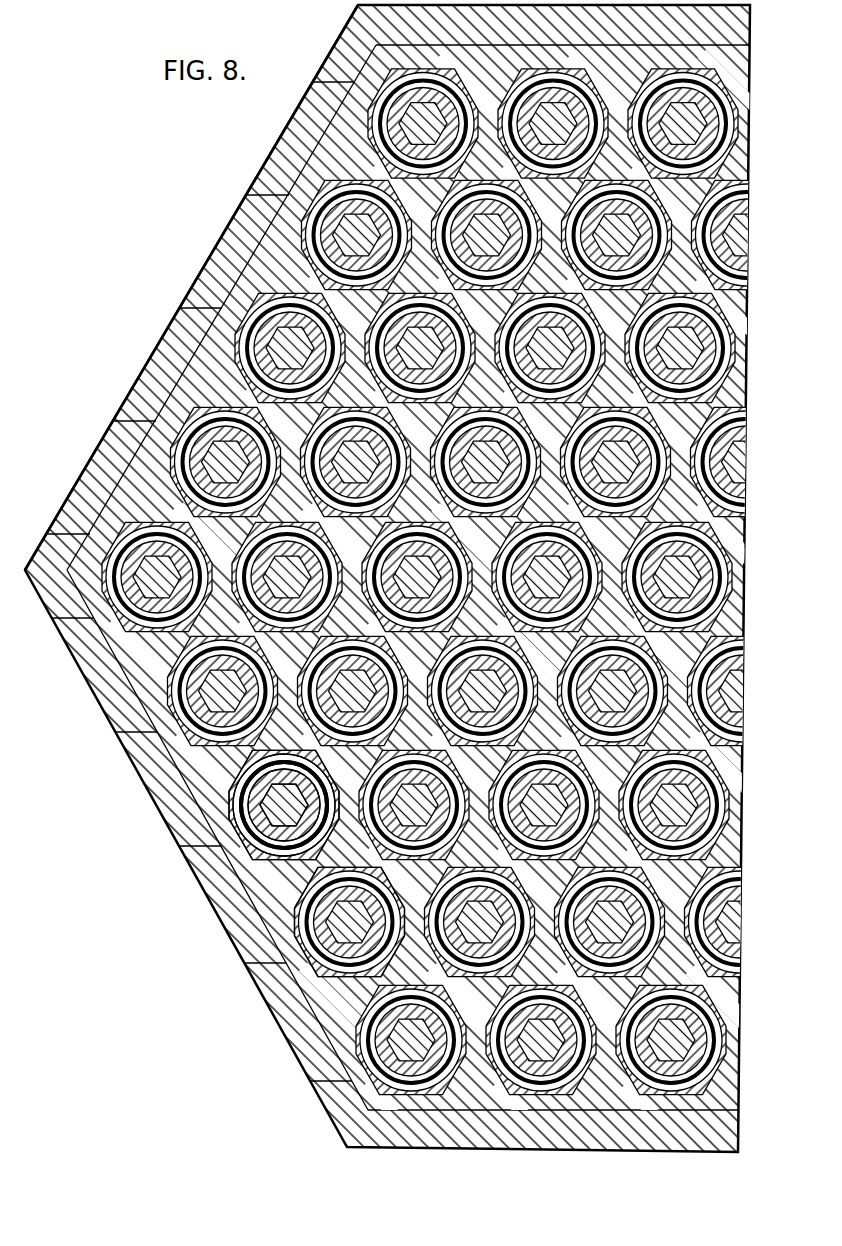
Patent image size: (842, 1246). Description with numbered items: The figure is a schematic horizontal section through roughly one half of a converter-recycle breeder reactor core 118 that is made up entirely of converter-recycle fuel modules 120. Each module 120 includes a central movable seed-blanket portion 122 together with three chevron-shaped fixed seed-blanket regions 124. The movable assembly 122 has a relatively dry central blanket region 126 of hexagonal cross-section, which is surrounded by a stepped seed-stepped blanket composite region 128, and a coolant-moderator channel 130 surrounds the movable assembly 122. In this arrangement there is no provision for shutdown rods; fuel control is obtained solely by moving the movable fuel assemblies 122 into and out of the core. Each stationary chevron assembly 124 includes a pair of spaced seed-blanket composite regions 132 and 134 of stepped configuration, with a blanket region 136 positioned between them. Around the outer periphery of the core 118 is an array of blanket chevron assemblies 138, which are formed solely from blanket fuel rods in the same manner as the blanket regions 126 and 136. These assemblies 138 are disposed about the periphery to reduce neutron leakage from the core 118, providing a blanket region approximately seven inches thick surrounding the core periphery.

The reactor core 118 is at (230, 224).
The converter-recycle fuel module 120 is at (630, 1125).
The movable seed-blanket portion 122 is at (307, 937).
The fixed seed-blanket region 124 is at (407, 912).
The central blanket region 126 is at (262, 858).
The stepped seed-stepped blanket composite region 128 is at (257, 850).
The coolant-moderator channel 130 is at (260, 826).
The seed-blanket composite region 132 is at (240, 817).
The seed-blanket composite region 134 is at (237, 742).
The blanket region 136 is at (237, 781).
The blanket chevron assembly 138 is at (150, 365).